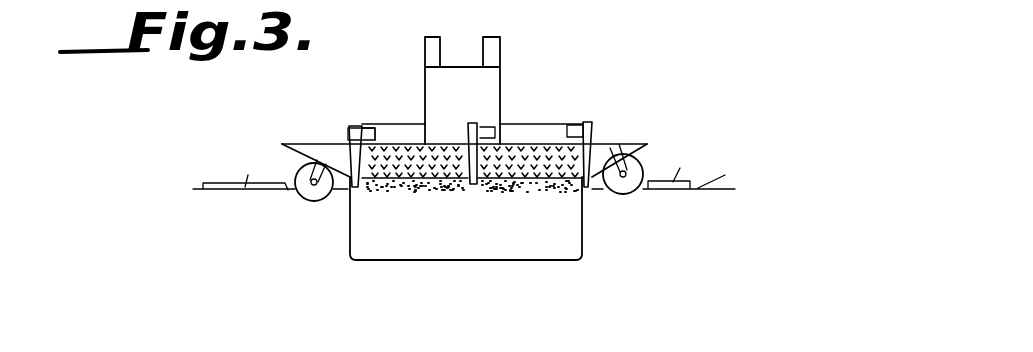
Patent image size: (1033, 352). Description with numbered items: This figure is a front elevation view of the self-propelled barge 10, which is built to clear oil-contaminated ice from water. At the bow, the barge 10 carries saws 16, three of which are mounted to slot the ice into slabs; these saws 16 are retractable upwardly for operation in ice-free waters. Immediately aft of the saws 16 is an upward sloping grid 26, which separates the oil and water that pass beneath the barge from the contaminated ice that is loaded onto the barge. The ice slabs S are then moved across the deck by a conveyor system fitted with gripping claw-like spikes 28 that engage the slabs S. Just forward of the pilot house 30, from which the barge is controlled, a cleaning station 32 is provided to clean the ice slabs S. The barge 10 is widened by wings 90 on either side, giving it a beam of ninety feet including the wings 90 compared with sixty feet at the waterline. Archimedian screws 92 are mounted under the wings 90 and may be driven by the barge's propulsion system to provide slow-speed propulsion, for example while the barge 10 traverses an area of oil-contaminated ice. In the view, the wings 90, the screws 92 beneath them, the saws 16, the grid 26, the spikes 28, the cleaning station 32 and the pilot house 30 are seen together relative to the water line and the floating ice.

The self-propelled barge 10 is at (268, 252).
The saws 16 is at (357, 202).
The upward sloping grid 26 is at (510, 190).
The gripping claw-like spikes 28 is at (520, 145).
The pilot house 30 is at (497, 80).
The cleaning station 32 is at (407, 127).
The ice slabs S is at (392, 127).
The wings 90 is at (313, 151).
The Archimedian screws 92 is at (313, 201).